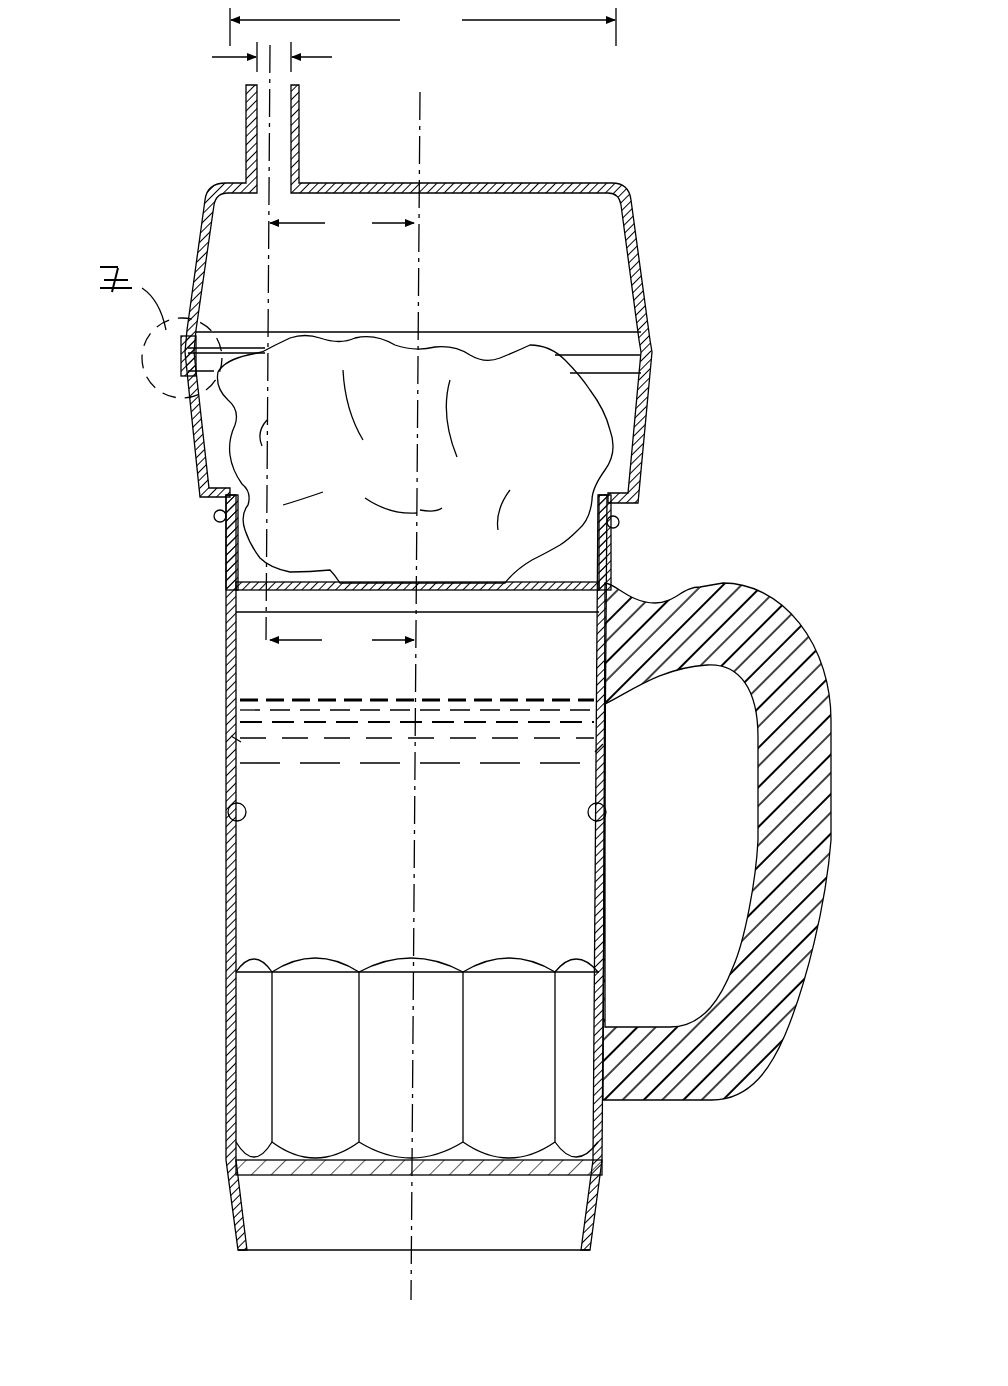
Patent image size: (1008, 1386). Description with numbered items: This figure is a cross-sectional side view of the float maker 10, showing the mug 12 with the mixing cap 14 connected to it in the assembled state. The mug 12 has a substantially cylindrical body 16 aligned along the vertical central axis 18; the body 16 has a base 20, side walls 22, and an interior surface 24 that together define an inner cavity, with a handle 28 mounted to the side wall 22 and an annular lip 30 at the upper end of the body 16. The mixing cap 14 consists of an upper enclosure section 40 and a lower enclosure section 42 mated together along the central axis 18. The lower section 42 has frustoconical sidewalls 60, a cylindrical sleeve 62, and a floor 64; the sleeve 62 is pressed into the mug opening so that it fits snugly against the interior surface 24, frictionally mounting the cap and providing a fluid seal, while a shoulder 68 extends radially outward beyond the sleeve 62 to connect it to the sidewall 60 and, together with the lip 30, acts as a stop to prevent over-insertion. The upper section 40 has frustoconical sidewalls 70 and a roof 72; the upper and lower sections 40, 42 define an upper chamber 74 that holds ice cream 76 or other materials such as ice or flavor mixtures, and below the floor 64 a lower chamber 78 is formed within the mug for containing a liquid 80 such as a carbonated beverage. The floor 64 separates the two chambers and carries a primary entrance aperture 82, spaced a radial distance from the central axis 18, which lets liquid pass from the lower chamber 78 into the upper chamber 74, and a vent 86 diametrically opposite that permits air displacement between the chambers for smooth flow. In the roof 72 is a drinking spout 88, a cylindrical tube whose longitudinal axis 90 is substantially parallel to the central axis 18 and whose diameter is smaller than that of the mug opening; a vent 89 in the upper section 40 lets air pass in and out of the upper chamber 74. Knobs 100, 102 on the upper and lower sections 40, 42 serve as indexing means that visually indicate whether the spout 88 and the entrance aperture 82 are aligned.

The float maker 10 is at (772, 482).
The mug 12 is at (203, 991).
The mixing cap 14 is at (690, 318).
The body 16 is at (226, 784).
The central axis 18 is at (424, 122).
The base 20 is at (365, 1172).
The side walls 22 is at (234, 740).
The interior surface 24 is at (229, 820).
The handle 28 is at (837, 760).
The annular lip 30 is at (616, 537).
The upper enclosure section 40 is at (183, 261).
The lower enclosure section 42 is at (175, 417).
The frustoconical sidewalls 60 is at (650, 430).
The cylindrical sleeve 62 is at (222, 502).
The floor 64 is at (608, 575).
The shoulder 68 is at (630, 512).
The frustoconical sidewalls 70 is at (642, 262).
The roof 72 is at (490, 183).
The upper chamber 74 is at (605, 228).
The ice cream 76 is at (560, 412).
The lower chamber 78 is at (242, 678).
The liquid 80 is at (332, 893).
The primary entrance aperture 82 is at (240, 610).
The vent 86 is at (577, 591).
The drinking spout 88 is at (299, 152).
The vent 89 is at (574, 183).
The longitudinal axis 90 is at (252, 150).
The knob 100 is at (176, 345).
The knob 102 is at (164, 372).